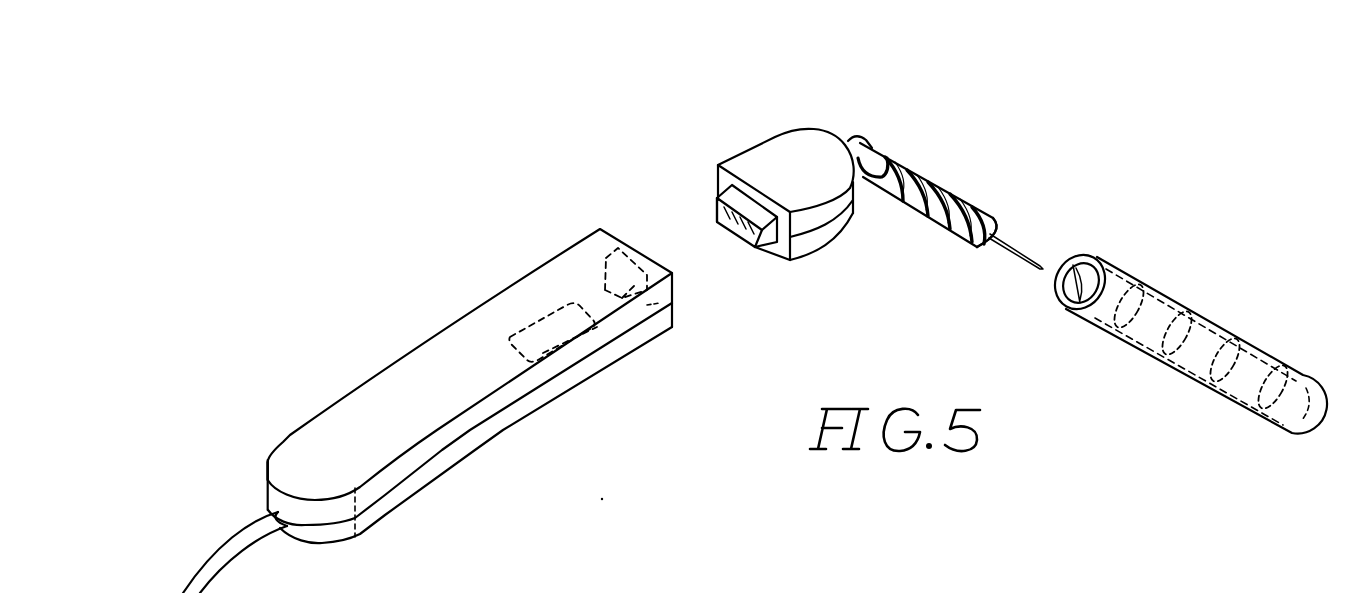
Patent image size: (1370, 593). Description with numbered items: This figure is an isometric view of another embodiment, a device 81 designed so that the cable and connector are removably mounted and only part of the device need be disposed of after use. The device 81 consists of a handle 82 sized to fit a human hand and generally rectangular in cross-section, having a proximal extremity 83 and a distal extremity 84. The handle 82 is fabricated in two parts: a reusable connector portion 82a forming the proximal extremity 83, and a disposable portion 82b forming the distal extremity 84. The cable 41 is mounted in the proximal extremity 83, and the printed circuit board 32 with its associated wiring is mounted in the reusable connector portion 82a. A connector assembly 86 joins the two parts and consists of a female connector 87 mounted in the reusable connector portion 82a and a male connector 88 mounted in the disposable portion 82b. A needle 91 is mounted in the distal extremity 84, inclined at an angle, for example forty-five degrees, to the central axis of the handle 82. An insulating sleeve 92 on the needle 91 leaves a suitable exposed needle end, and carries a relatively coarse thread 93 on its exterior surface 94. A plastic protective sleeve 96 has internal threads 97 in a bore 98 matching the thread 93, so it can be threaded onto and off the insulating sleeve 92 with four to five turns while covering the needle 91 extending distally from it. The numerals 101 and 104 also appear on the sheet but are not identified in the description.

The device 81 is at (453, 205).
The handle 82 is at (466, 386).
The reusable connector portion 82a is at (385, 392).
The disposable portion 82b is at (770, 140).
The proximal extremity 83 is at (283, 442).
The cable 41 is at (213, 558).
The printed circuit board 32 is at (540, 312).
The female connector 87 is at (603, 230).
The distal extremity 84 is at (780, 148).
The connector assembly 86 is at (712, 285).
The male connector 88 is at (742, 250).
The thread 93 is at (900, 163).
The exterior surface 94 is at (935, 182).
The insulating sleeve 92 is at (983, 208).
The needle 91 is at (1020, 250).
The internal threads 97 is at (1068, 291).
The protective sleeve 96 is at (1254, 342).
The bore 98 is at (1178, 312).
The element 101 is at (901, 578).
The element 104 is at (977, 590).